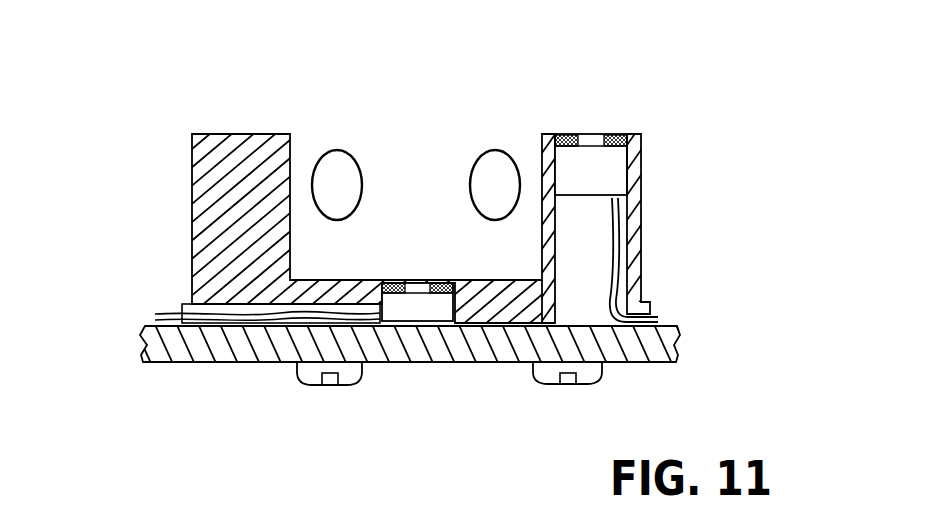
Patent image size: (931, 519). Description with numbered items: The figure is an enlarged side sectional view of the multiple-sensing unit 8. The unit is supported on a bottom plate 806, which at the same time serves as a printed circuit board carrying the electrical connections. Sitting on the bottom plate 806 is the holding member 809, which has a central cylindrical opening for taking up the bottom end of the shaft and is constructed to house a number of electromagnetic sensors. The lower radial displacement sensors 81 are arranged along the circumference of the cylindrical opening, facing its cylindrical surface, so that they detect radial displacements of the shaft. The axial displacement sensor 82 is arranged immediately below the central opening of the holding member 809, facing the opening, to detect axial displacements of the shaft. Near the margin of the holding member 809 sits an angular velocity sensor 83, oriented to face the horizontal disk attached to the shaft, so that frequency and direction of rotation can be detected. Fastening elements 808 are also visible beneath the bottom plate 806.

The multiple-sensing unit 8 is at (404, 259).
The lower radial displacement sensor 81 is at (488, 192).
The axial displacement sensor 82 is at (412, 308).
The angular velocity sensor 83 is at (578, 169).
The bottom plate 806 is at (208, 348).
The screw 808 is at (322, 375).
The holding member 809 is at (208, 264).